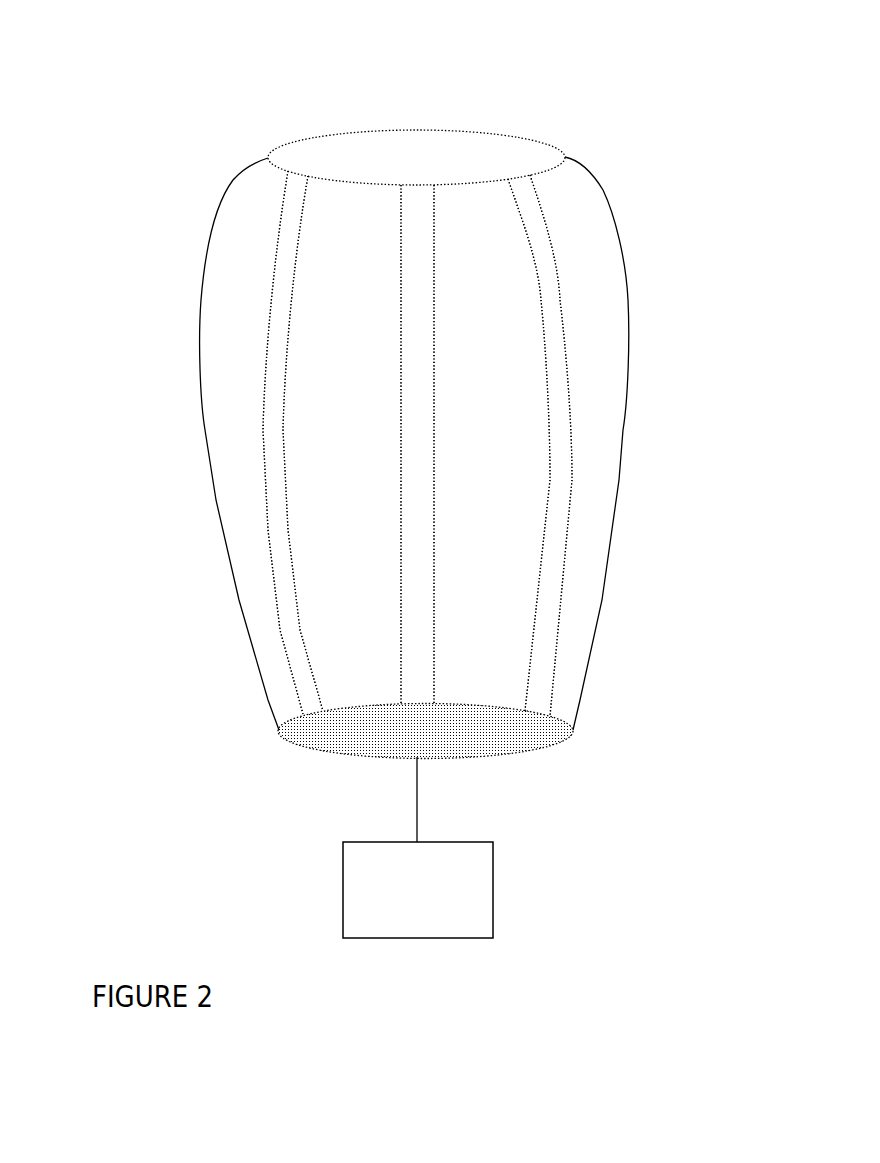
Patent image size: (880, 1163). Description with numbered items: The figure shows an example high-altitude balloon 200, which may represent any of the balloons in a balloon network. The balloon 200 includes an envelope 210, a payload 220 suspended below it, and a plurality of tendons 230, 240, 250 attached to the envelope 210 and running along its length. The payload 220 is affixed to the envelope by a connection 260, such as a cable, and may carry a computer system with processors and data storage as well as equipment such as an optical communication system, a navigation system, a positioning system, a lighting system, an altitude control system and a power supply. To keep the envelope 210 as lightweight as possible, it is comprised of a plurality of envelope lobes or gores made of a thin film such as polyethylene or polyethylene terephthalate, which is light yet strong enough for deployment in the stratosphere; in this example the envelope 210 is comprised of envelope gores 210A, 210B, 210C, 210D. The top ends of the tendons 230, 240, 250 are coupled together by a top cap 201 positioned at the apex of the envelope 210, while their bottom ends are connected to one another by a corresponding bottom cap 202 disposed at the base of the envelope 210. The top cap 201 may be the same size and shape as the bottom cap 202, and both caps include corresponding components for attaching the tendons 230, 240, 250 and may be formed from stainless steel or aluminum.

The high-altitude balloon 200 is at (672, 86).
The top cap 201 is at (545, 135).
The bottom cap 202 is at (375, 750).
The envelope 210 is at (628, 295).
The envelope gore 210A is at (225, 486).
The envelope gore 210B is at (331, 552).
The envelope gore 210C is at (519, 566).
The envelope gore 210D is at (604, 440).
The payload 220 is at (343, 884).
The tendon 230 is at (296, 168).
The tendon 240 is at (415, 183).
The tendon 250 is at (517, 177).
The connection 260 is at (418, 810).